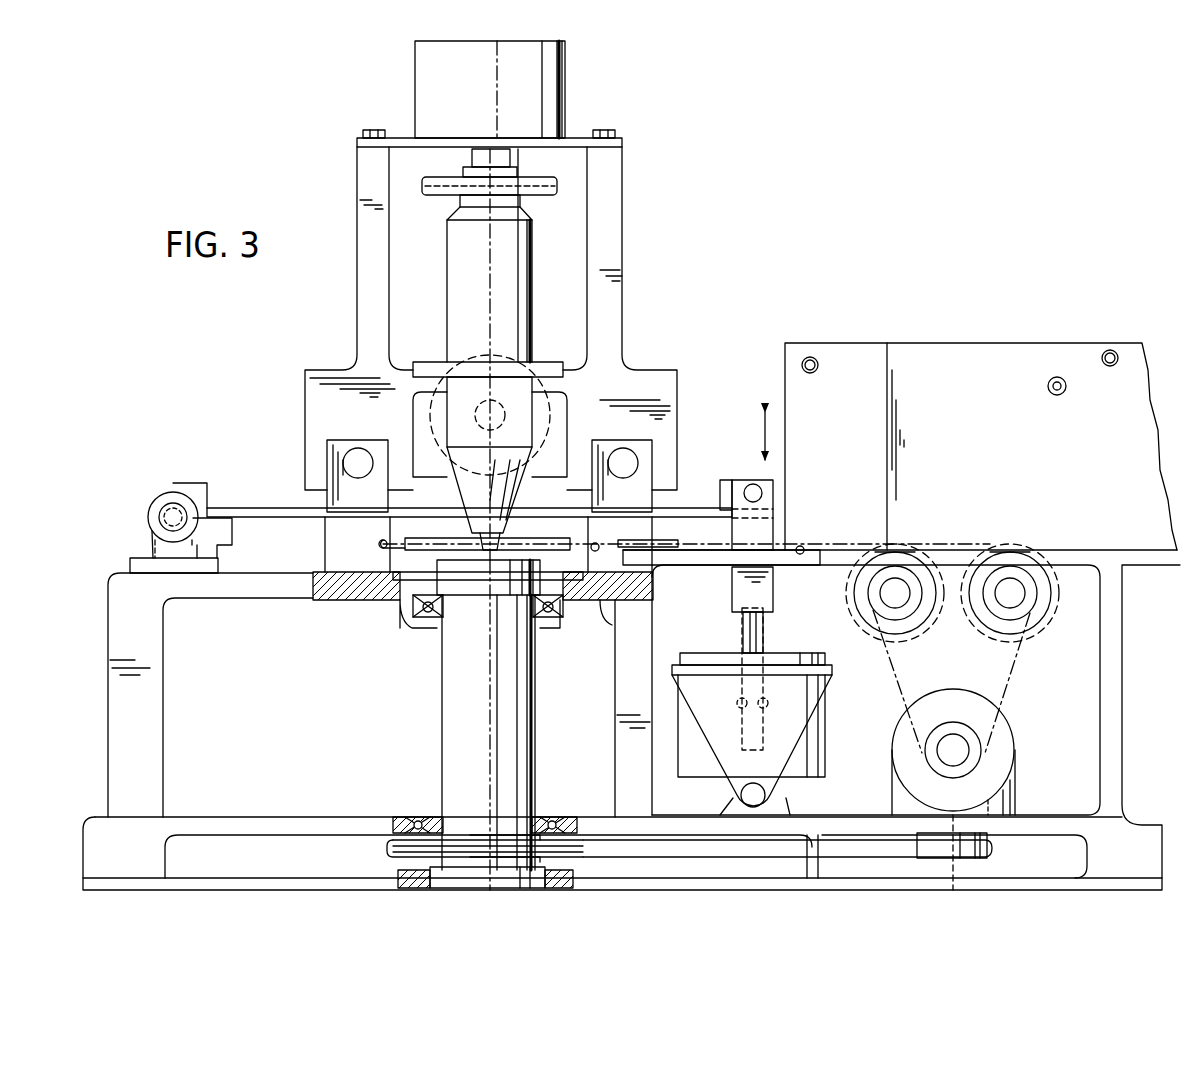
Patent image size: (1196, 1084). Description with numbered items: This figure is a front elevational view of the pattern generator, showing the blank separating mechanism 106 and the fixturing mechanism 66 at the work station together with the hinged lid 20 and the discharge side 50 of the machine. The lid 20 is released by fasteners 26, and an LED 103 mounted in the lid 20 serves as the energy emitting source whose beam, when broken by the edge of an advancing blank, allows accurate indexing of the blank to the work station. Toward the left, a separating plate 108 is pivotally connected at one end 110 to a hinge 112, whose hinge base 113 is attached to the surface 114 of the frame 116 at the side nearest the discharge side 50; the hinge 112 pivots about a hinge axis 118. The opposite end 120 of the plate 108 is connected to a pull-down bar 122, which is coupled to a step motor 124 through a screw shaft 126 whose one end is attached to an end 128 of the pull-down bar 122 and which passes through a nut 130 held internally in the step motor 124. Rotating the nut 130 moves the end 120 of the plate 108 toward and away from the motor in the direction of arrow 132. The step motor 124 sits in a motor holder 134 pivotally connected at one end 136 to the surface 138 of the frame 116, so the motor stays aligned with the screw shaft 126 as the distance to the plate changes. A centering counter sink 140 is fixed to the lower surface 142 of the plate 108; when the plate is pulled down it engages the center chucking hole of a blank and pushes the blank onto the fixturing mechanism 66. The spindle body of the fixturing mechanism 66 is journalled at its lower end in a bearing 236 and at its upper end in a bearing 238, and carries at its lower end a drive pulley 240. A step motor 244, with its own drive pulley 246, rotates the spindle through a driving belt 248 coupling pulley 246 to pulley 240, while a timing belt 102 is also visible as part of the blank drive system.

The hinged lid 20 is at (928, 343).
The fasteners 26 is at (812, 356).
The discharge side 50 is at (620, 717).
The fixturing mechanism 66 is at (436, 642).
The timing belt 102 is at (1020, 645).
The LED 103 is at (1066, 392).
The blank separating mechanism 106 is at (727, 390).
The separating plate 108 is at (287, 507).
The one end of separating plate 110 is at (222, 508).
The hinge 112 is at (175, 482).
The hinge base 113 is at (145, 557).
The surface of the frame 114 is at (120, 572).
The frame 116 is at (190, 590).
The hinge axis 118 is at (172, 516).
The opposite end of separating plate 120 is at (712, 507).
The pull-down bar 122 is at (748, 486).
The step motor 124 is at (825, 714).
The screw shaft 126 is at (765, 629).
The end of pull-down bar 128 is at (775, 578).
The nut 130 is at (765, 706).
The arrow 132 is at (762, 430).
The motor holder 134 is at (828, 684).
The one end of motor holder 136 is at (783, 786).
The surface of the frame 138 is at (833, 814).
The centering counter sink 140 is at (505, 522).
The lower surface of the plate 142 is at (418, 526).
The bearing 236 is at (540, 818).
The bearing 238 is at (547, 612).
The drive pulley 240 is at (397, 855).
The step motor 244 is at (1013, 791).
The drive pulley 246 is at (972, 858).
The driving belt 248 is at (725, 850).